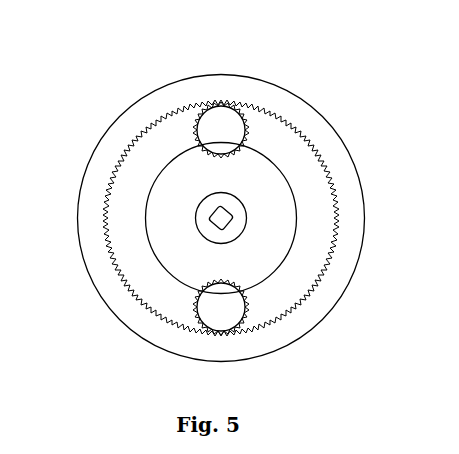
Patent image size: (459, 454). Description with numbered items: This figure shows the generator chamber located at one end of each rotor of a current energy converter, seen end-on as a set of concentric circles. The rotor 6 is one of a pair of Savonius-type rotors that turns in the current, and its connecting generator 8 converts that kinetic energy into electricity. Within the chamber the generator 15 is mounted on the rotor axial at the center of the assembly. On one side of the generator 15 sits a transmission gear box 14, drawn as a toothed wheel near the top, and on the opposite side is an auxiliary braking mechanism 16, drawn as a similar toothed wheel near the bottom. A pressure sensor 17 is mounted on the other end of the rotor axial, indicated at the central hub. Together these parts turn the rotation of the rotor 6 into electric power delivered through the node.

The rotor 6 is at (298, 92).
The connecting generator 8 is at (310, 140).
The transmission gear box 14 is at (246, 121).
The generator 15 is at (272, 204).
The auxiliary braking mechanism 16 is at (252, 310).
The pressure sensor 17 is at (212, 223).